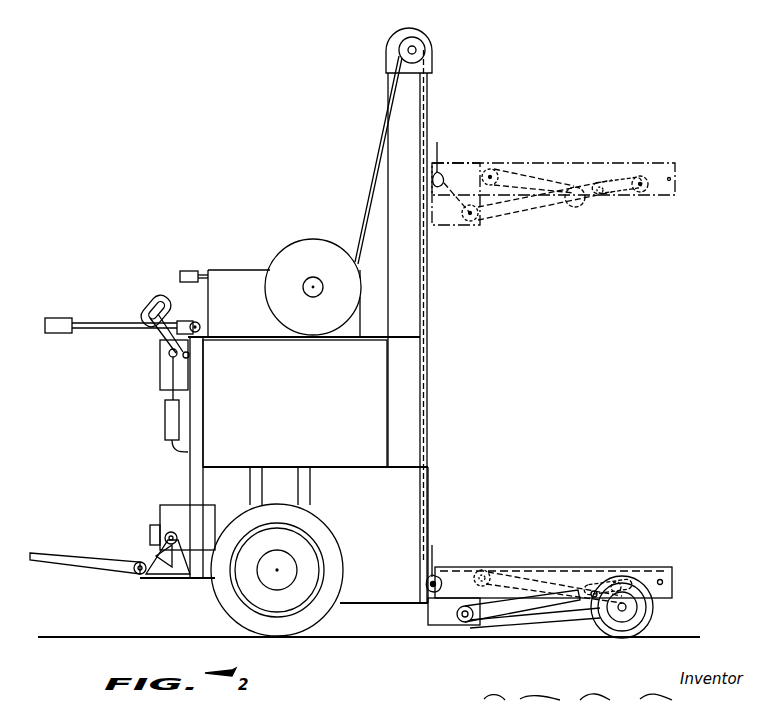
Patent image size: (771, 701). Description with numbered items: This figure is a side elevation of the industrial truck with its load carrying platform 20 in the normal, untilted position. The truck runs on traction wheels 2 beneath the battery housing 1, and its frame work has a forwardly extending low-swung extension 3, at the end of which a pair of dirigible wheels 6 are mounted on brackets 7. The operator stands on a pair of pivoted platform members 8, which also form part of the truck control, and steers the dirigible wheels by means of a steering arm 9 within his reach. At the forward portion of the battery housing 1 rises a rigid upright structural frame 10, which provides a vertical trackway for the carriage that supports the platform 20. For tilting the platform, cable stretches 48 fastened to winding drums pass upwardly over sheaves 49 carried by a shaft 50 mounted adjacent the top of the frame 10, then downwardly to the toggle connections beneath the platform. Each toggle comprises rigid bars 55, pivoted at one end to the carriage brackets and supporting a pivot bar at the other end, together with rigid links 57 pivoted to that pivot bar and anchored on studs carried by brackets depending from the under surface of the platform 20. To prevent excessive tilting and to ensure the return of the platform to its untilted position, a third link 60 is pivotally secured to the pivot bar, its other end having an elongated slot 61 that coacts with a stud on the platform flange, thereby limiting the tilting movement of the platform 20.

The battery housing 1 is at (304, 402).
The traction wheels 2 is at (222, 592).
The low-swung extension 3 is at (570, 606).
The dirigible wheels 6 is at (653, 610).
The brackets 7 is at (584, 606).
The pivoted platform members 8 is at (88, 562).
The steering arm 9 is at (88, 318).
The upright structural frame 10 is at (408, 352).
The platform 20 is at (586, 567).
The cable stretches 48 is at (378, 172).
The sheaves 49 is at (421, 41).
The shaft 50 is at (425, 50).
The rigid bars 55 is at (500, 612).
The rigid links 57 is at (515, 575).
The third link 60 is at (612, 585).
The elongated slot 61 is at (601, 196).